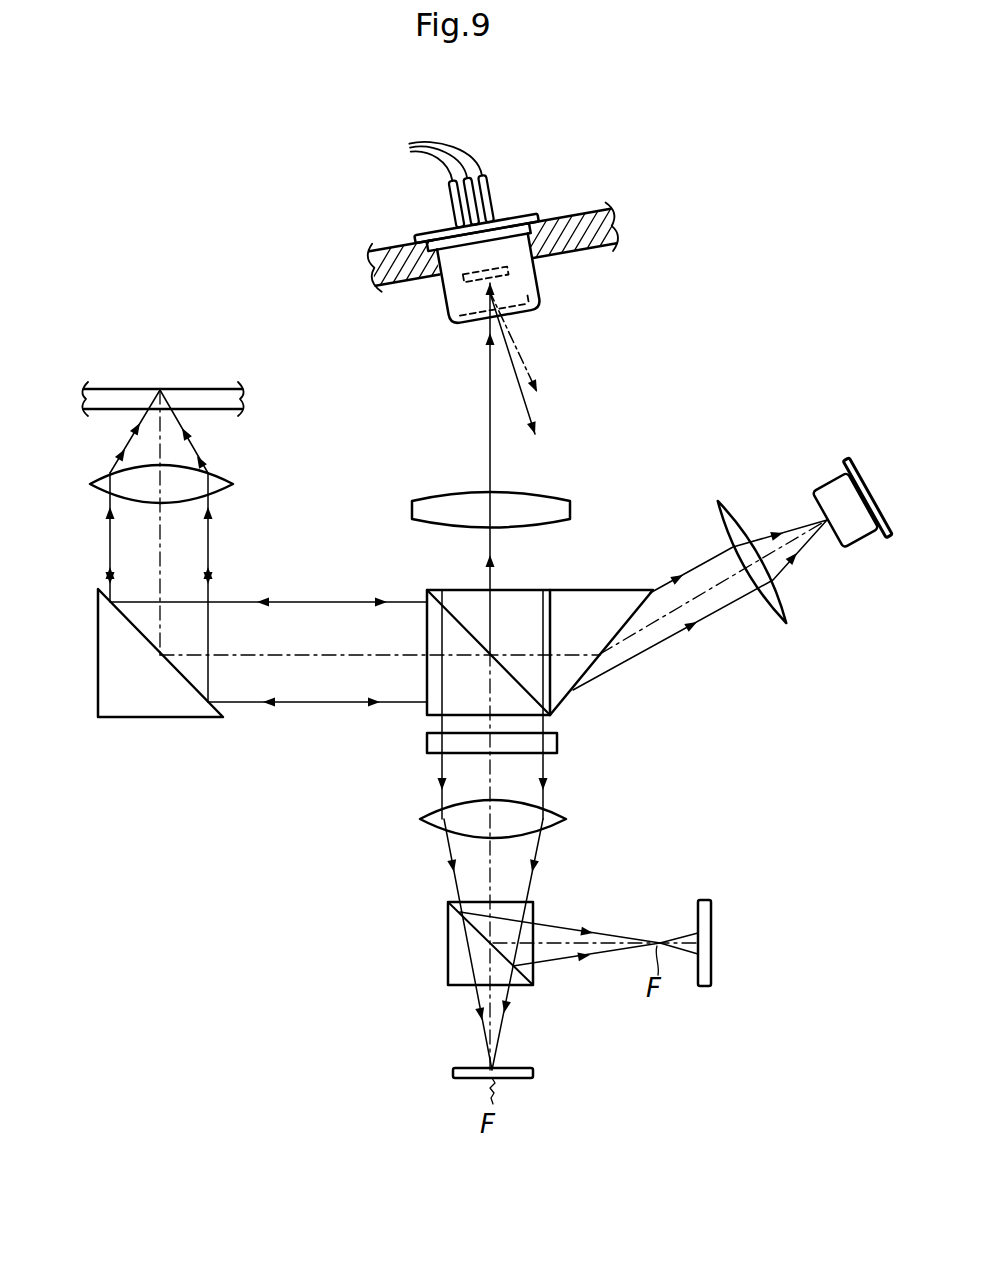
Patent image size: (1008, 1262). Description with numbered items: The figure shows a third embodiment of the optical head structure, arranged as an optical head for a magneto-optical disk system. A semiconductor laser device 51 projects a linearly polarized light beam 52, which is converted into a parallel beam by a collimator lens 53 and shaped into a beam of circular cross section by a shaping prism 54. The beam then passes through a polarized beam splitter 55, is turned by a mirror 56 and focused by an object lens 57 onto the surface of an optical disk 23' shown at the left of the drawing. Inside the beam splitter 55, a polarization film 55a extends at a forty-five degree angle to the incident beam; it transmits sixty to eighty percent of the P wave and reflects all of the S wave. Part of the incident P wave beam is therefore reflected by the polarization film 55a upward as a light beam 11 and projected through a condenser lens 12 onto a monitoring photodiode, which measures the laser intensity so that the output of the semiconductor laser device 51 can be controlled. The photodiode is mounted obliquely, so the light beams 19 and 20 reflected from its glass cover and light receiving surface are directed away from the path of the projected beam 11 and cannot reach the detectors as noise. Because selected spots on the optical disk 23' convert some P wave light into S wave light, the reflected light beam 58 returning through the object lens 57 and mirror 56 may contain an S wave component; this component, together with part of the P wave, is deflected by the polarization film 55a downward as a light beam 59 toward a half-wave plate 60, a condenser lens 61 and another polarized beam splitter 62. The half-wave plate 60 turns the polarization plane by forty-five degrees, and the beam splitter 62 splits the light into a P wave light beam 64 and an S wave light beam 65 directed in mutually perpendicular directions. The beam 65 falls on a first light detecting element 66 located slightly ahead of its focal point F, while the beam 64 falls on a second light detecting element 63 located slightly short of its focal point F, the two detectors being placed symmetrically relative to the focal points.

The light beam 11 is at (490, 441).
The condenser lens 12 is at (550, 493).
The light beam 19 is at (527, 406).
The light beam 20 is at (527, 362).
The optical disk 23' is at (184, 367).
The semiconductor laser device 51 is at (863, 542).
The light beam 52 is at (800, 520).
The collimator lens 53 is at (738, 520).
The shaping prism 54 is at (580, 610).
The polarized beam splitter 55 is at (432, 630).
The polarization film 55a is at (527, 683).
The mirror 56 is at (162, 710).
The object lens 57 is at (220, 473).
The light beam 58 is at (298, 704).
The light beam 59 is at (440, 767).
The half-wave plate 60 is at (557, 741).
The condenser lens 61 is at (552, 813).
The polarized beam splitter 62 is at (448, 948).
The second light detecting element 63 is at (453, 1072).
The light beam 64 is at (515, 998).
The light beam 65 is at (565, 925).
The first light detecting element 66 is at (705, 900).